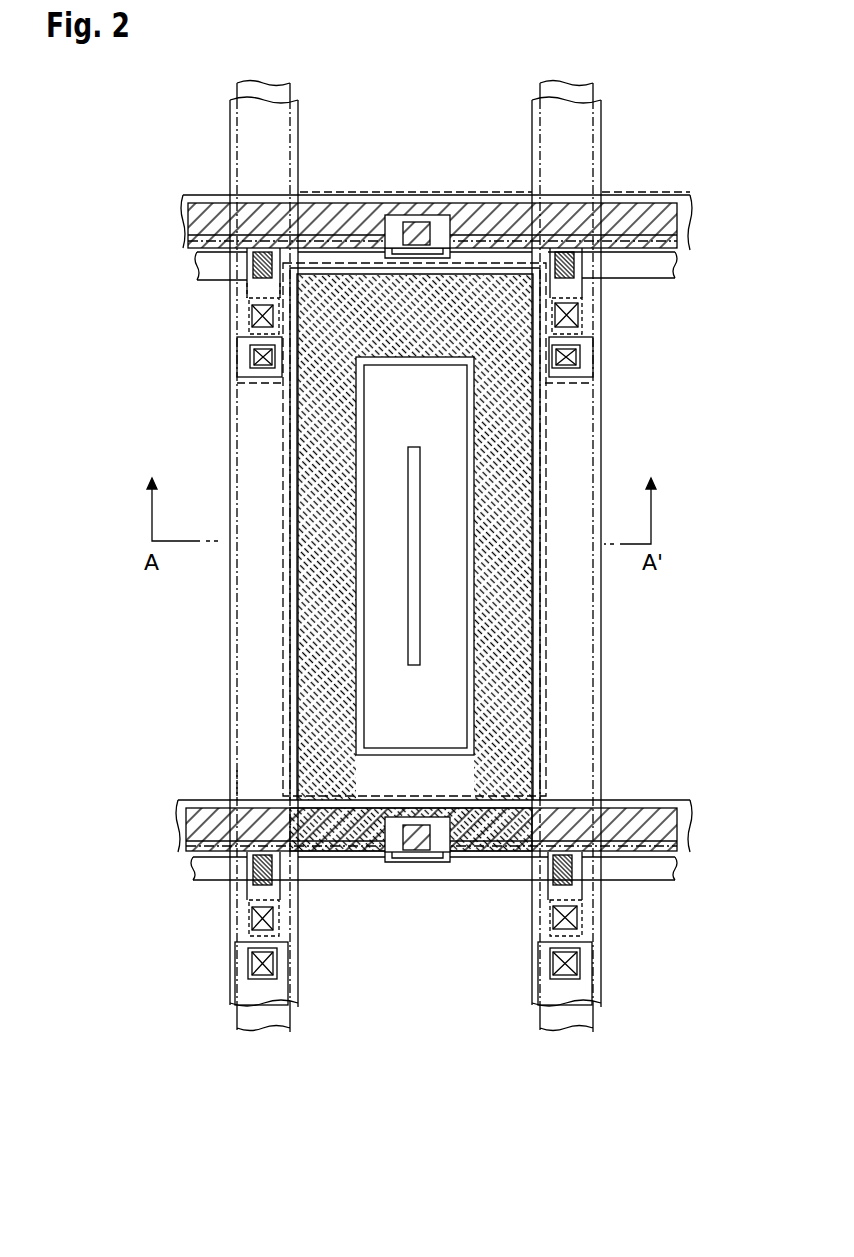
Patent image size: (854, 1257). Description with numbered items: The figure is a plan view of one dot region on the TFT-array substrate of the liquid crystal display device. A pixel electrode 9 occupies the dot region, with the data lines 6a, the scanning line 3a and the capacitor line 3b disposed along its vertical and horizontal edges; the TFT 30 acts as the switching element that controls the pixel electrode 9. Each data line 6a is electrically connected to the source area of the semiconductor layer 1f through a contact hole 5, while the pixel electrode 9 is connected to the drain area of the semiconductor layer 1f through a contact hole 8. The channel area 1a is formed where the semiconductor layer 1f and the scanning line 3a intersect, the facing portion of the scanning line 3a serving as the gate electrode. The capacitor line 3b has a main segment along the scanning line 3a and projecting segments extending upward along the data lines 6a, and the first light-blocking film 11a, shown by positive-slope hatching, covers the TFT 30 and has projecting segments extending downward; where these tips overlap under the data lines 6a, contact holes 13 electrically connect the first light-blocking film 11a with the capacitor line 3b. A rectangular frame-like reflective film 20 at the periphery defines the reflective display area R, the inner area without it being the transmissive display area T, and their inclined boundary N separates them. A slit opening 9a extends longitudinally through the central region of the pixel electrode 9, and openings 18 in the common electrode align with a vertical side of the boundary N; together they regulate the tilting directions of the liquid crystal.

The first light-blocking film 11a is at (221, 206).
The scanning line 3a is at (200, 262).
The channel area 1a is at (238, 869).
The capacitor line 3b is at (283, 152).
The data line 6a is at (228, 618).
The semiconductor layer 1f is at (228, 785).
The contact hole 5 is at (248, 306).
The contact hole 13 is at (248, 350).
The pixel electrode 9 is at (285, 403).
The reflective film 20 is at (520, 435).
The opening 18 is at (370, 470).
The slit opening 9a is at (416, 657).
The boundary N is at (440, 749).
The reflective display area R is at (420, 334).
The transmissive display area T is at (421, 416).
The contact hole 8 is at (420, 862).
The TFT 30 is at (305, 956).